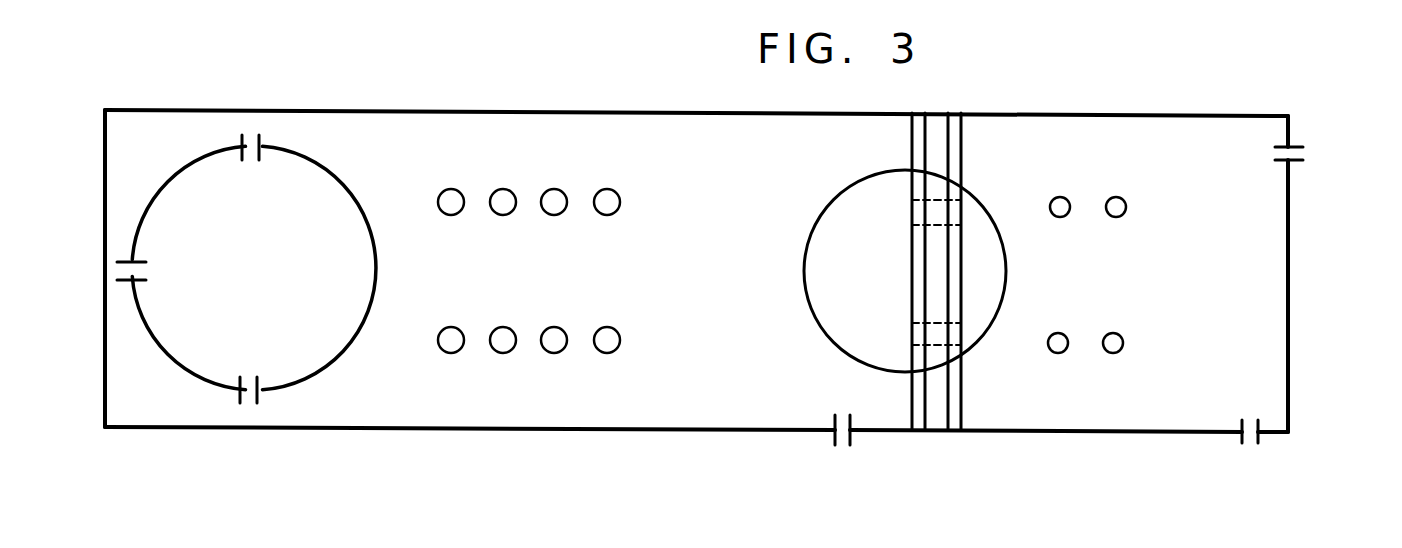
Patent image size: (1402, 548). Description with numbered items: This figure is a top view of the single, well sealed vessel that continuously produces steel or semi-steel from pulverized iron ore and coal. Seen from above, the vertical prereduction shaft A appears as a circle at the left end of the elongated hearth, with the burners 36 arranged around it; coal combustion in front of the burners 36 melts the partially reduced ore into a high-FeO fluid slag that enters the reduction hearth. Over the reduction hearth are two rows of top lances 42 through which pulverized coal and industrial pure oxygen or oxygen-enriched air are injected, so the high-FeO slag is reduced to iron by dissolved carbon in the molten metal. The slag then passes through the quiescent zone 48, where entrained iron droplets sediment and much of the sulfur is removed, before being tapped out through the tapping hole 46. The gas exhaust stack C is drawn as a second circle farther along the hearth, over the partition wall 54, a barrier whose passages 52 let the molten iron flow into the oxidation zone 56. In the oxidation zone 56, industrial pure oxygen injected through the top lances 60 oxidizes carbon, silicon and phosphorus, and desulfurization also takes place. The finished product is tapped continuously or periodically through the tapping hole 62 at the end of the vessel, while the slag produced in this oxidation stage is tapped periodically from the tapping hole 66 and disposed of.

The prereduction shaft A is at (147, 208).
The gas exhaust stack C is at (820, 210).
The burners 36 is at (251, 140).
The top lances 42 is at (604, 189).
The tapping hole 46 is at (840, 442).
The quiescent zone 48 is at (753, 294).
The passages 52 is at (955, 215).
The partition wall 54 is at (940, 162).
The oxidation zone 56 is at (1280, 303).
The top lances 60 is at (1110, 199).
The tapping hole 62 is at (1303, 150).
The tapping hole 66 is at (1252, 442).